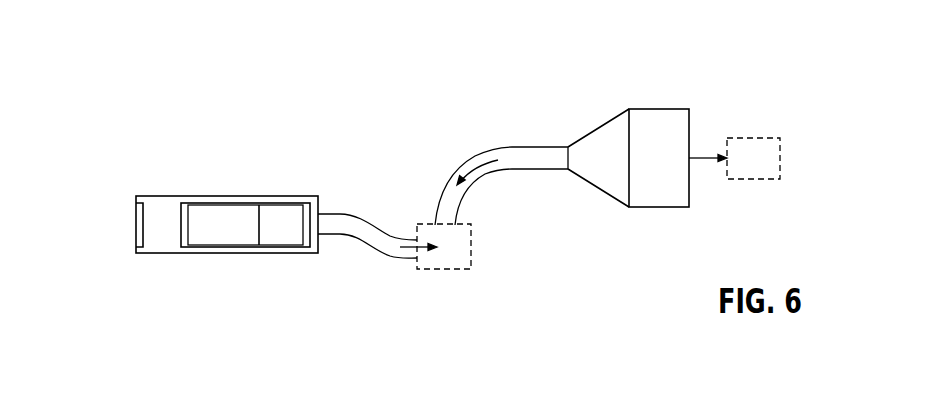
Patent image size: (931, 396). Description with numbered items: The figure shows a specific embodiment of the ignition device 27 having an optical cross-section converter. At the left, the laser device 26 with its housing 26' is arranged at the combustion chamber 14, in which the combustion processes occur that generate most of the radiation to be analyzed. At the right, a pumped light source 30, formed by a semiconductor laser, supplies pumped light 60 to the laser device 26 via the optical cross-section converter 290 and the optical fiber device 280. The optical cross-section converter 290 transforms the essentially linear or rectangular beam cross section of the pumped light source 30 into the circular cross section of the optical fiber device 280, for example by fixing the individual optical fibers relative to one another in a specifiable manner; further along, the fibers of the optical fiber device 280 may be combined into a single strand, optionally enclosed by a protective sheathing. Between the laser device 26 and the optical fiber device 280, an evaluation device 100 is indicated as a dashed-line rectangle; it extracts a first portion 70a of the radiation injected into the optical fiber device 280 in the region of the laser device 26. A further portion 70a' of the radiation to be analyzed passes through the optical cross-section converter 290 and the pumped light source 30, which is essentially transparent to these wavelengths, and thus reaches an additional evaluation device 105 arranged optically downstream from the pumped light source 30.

The combustion chamber 14 is at (120, 238).
The laser device 26 is at (245, 166).
The housing 26' is at (159, 166).
The ignition device 27 is at (313, 94).
The pumped light source 30 is at (658, 109).
The pumped light 60 is at (472, 157).
The first portion of radiation to be analyzed 70a is at (358, 266).
The further portion of radiation to be analyzed 70a' is at (707, 104).
The evaluation device 100 is at (471, 253).
The additional evaluation device 105 is at (757, 157).
The optical fiber device 280 is at (540, 147).
The optical cross-section converter 290 is at (597, 125).